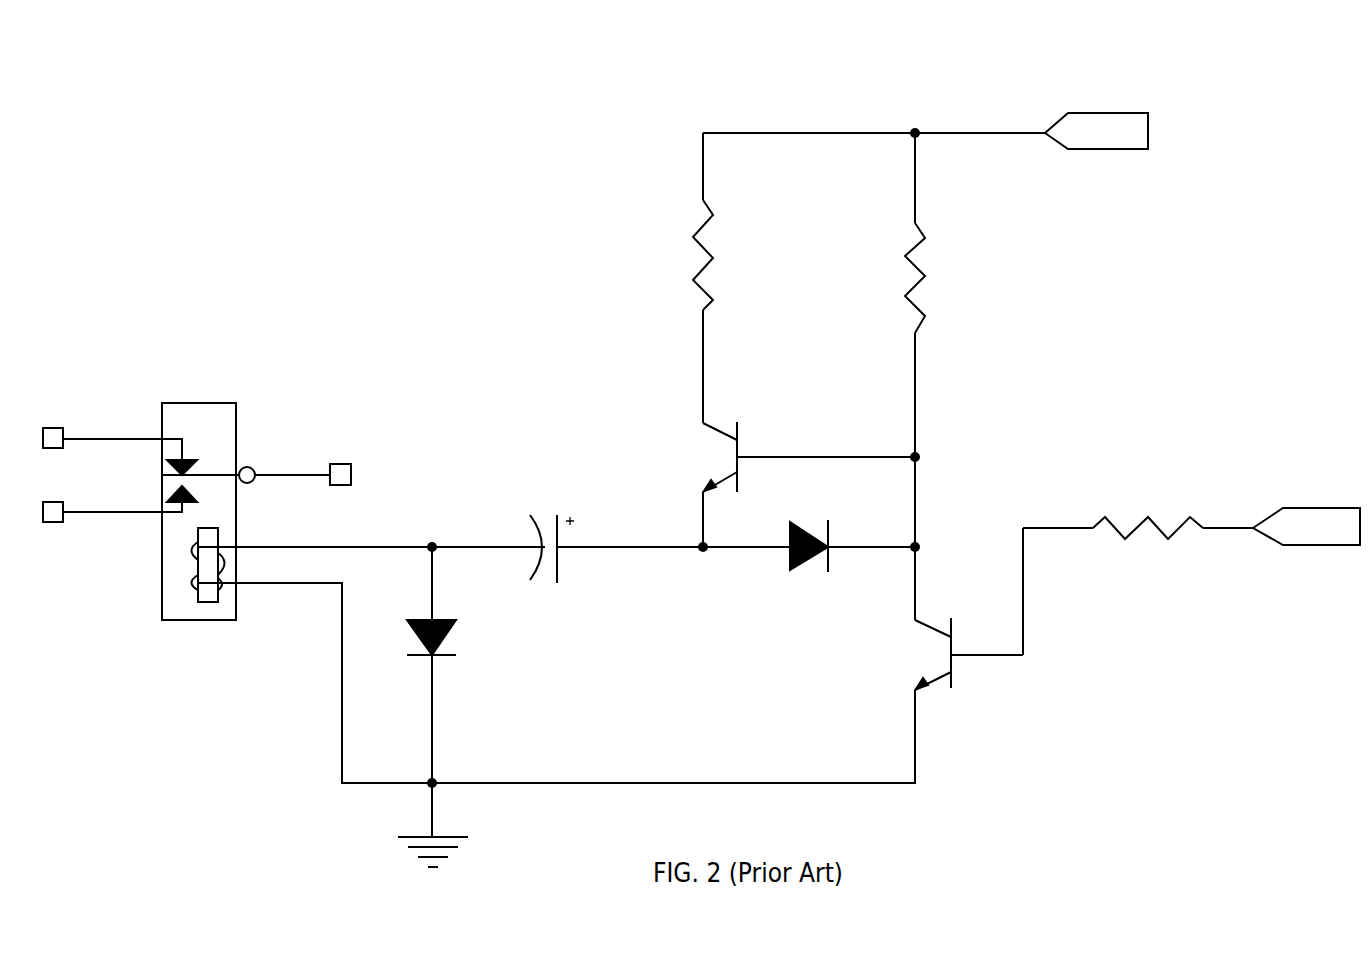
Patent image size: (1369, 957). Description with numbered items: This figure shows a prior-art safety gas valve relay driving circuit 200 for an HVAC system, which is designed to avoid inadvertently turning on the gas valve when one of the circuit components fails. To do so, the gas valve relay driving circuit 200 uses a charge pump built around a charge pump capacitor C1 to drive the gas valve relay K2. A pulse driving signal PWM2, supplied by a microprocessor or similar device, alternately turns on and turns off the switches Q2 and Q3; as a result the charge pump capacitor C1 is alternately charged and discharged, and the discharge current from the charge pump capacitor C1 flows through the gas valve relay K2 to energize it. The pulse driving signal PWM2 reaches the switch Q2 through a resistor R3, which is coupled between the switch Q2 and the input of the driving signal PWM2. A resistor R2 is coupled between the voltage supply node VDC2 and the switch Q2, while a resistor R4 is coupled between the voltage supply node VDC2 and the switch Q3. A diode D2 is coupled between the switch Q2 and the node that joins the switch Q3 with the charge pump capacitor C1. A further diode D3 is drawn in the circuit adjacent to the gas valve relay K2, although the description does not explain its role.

The gas valve relay driving circuit 200 is at (444, 71).
The gas valve relay K2 is at (197, 488).
The diode D3 is at (459, 647).
The charge pump capacitor C1 is at (531, 494).
The switch Q3 is at (785, 484).
The diode D2 is at (795, 599).
The resistor R4 is at (728, 255).
The resistor R2 is at (973, 258).
The switch Q2 is at (922, 671).
The resistor R3 is at (1140, 492).
The voltage supply node VDC2 is at (1096, 153).
The pulse driving signal PWM2 is at (1306, 547).